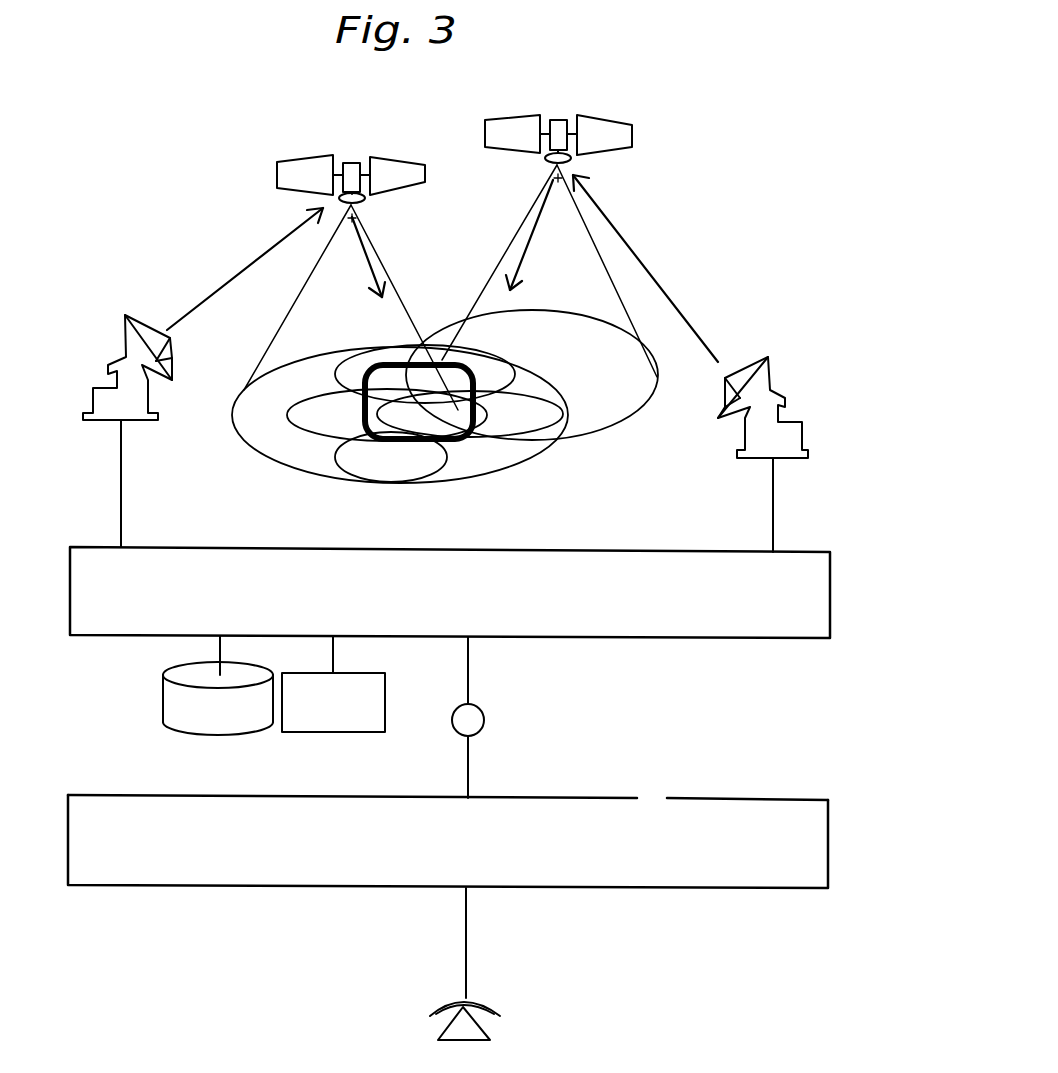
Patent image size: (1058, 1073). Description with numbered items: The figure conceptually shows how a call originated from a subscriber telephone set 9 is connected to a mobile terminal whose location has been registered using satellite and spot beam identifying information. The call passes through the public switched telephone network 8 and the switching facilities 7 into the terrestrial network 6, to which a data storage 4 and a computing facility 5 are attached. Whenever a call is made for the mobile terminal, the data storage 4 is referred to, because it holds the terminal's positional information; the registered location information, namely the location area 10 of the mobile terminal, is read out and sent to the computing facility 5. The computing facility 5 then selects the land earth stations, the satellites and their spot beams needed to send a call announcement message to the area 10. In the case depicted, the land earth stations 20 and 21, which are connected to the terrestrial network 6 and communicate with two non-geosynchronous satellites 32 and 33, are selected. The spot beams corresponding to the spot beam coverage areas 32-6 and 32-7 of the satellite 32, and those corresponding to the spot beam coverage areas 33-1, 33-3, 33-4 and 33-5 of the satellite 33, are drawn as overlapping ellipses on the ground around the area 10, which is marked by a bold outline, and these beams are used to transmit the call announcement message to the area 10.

The non-geosynchronous satellite 32 is at (634, 127).
The non-geosynchronous satellite 33 is at (427, 177).
The land earth station 21 is at (124, 317).
The land earth station 20 is at (771, 377).
The spot beam coverage area 32-6 is at (488, 447).
The spot beam coverage area 32-7 is at (462, 326).
The spot beam coverage area 33-1 is at (387, 415).
The spot beam coverage area 33-3 is at (389, 346).
The spot beam coverage area 33-4 is at (423, 418).
The spot beam coverage area 33-5 is at (306, 474).
The location area of mobile terminal 10 is at (466, 442).
The terrestrial network 6 is at (166, 547).
The data storage 4 is at (162, 710).
The computing facility 5 is at (282, 731).
The switching facilities 7 is at (485, 713).
The public switched telephone network 8 is at (148, 887).
The subscriber telephone set 9 is at (488, 998).